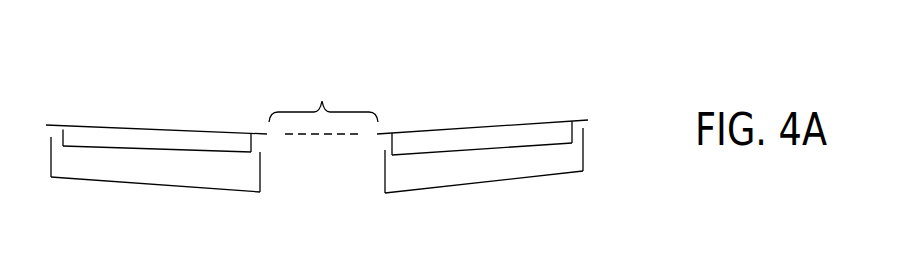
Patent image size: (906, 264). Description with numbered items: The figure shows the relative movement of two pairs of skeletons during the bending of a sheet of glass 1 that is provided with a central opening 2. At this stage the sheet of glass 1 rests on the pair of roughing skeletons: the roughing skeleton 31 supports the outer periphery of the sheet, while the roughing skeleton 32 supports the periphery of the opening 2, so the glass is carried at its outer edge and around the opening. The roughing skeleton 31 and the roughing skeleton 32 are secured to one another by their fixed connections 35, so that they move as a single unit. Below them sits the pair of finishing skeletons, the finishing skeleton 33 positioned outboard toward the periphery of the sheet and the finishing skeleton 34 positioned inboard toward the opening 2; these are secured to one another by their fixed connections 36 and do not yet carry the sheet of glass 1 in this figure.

The sheet of glass 1 is at (161, 128).
The opening 2 is at (323, 102).
The roughing skeleton 31 is at (67, 135).
The roughing skeleton 32 is at (247, 141).
The finishing skeleton 33 is at (48, 148).
The finishing skeleton 34 is at (383, 180).
The fixed connections 35 is at (162, 157).
The fixed connections 36 is at (102, 186).